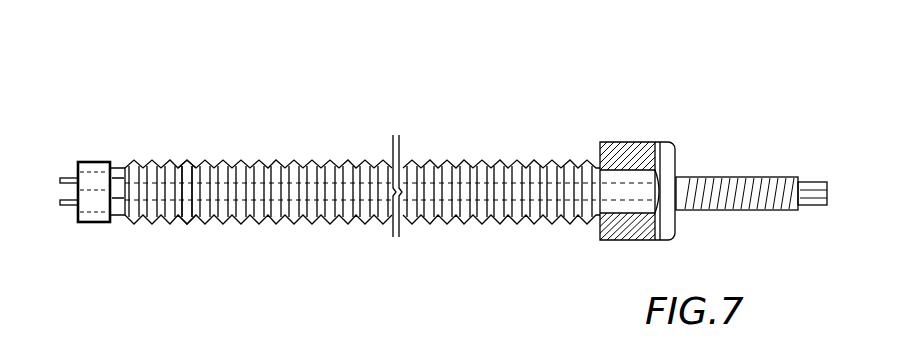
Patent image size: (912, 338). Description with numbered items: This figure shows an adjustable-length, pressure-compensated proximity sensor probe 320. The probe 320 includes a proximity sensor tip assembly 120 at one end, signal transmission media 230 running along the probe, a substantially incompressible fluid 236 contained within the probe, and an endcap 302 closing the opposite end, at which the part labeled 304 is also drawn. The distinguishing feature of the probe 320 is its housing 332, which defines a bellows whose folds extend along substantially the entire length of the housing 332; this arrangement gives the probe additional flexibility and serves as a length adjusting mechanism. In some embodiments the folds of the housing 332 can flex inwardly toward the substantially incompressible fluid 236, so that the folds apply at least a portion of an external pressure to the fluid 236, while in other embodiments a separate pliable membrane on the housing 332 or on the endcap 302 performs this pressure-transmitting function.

The proximity sensor tip assembly 120 is at (816, 180).
The signal transmission media 230 is at (265, 165).
The substantially incompressible fluid 236 is at (186, 202).
The endcap 302 is at (99, 224).
The connector pins 304 is at (65, 206).
The proximity sensor probe 320 is at (639, 123).
The housing 332 is at (485, 160).